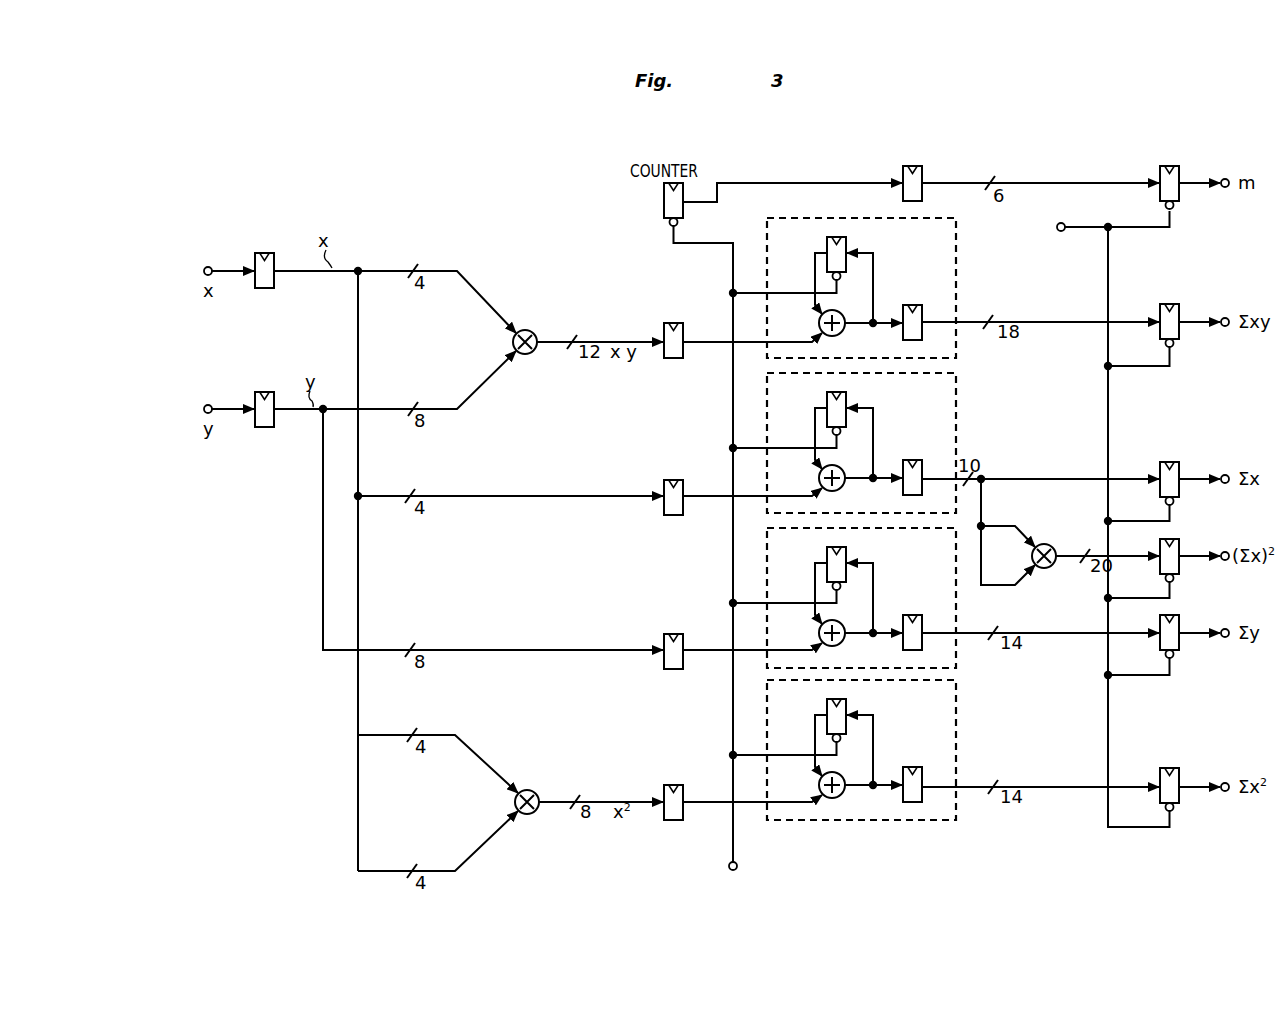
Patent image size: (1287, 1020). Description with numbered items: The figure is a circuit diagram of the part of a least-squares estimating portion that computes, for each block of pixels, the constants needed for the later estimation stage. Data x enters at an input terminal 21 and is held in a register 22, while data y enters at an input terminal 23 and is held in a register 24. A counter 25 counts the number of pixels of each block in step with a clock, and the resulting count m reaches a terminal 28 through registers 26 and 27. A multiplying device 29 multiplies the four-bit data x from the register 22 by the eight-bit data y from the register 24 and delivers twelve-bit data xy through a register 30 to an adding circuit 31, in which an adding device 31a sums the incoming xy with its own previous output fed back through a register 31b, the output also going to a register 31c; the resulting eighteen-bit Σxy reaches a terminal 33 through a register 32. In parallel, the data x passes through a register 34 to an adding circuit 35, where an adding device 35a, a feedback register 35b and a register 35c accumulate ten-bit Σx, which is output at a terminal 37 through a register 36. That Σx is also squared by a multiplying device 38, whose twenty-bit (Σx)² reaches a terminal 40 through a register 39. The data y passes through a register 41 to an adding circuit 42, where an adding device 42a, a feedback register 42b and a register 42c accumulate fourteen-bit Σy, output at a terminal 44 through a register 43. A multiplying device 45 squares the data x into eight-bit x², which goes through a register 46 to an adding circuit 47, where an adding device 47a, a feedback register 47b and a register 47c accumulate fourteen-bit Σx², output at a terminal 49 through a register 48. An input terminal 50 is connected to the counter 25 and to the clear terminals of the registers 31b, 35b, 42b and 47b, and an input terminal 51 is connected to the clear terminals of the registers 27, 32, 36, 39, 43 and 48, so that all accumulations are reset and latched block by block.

The input terminal 21 is at (206, 265).
The register 22 is at (264, 252).
The input terminal 23 is at (206, 403).
The register 24 is at (264, 391).
The counter 25 is at (663, 192).
The register 26 is at (902, 198).
The register 27 is at (1157, 201).
The terminal 28 is at (1227, 188).
The multiplying device 29 is at (513, 340).
The register 30 is at (673, 323).
The adding circuit 31 is at (871, 288).
The adding device 31a is at (842, 333).
The register 31b is at (847, 242).
The register 31c is at (912, 305).
The register 32 is at (1168, 304).
The terminal 33 is at (1225, 318).
The register 34 is at (673, 480).
The adding circuit 35 is at (871, 443).
The adding device 35a is at (842, 488).
The register 35b is at (847, 397).
The register 35c is at (912, 460).
The register 36 is at (1168, 462).
The terminal 37 is at (1225, 475).
The multiplying device 38 is at (1052, 544).
The register 39 is at (1173, 539).
The terminal 40 is at (1228, 552).
The register 41 is at (673, 634).
The adding circuit 42 is at (873, 598).
The adding device 42a is at (842, 643).
The register 42b is at (847, 552).
The register 42c is at (912, 615).
The register 43 is at (1177, 615).
The terminal 44 is at (1229, 629).
The multiplying device 45 is at (515, 800).
The register 46 is at (673, 785).
The adding circuit 47 is at (871, 750).
The adding device 47a is at (842, 795).
The register 47b is at (847, 704).
The register 47c is at (912, 767).
The register 48 is at (1170, 768).
The terminal 49 is at (1225, 783).
The input terminal 50 is at (733, 871).
The input terminal 51 is at (1057, 227).